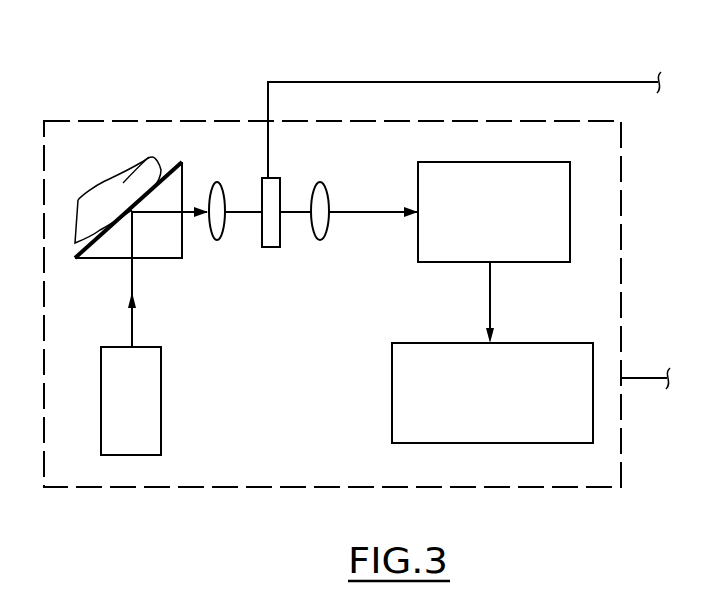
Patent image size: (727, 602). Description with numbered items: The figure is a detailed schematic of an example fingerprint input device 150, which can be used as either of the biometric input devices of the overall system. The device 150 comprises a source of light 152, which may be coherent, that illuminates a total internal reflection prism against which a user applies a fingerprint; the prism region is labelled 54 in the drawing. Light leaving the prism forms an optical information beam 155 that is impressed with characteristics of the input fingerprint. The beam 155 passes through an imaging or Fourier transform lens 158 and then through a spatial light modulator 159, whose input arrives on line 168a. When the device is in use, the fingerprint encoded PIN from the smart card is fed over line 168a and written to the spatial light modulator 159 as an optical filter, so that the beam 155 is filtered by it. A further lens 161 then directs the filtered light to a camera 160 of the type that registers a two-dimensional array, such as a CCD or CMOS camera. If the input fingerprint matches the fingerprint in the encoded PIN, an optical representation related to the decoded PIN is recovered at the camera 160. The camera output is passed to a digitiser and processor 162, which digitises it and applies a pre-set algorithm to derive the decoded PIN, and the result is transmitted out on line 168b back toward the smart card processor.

The fingerprint input device 150 is at (98, 92).
The source of light 152 is at (161, 417).
The prism with finger 54 is at (183, 250).
The optical information beam 155 is at (185, 213).
The imaging or Fourier transform lens 158 is at (226, 225).
The spatial light modulator 159 is at (282, 237).
The lens 161 is at (330, 222).
The camera 160 is at (498, 162).
The line 168a is at (483, 82).
The line 168b is at (643, 378).
The digitiser and processor 162 is at (392, 382).